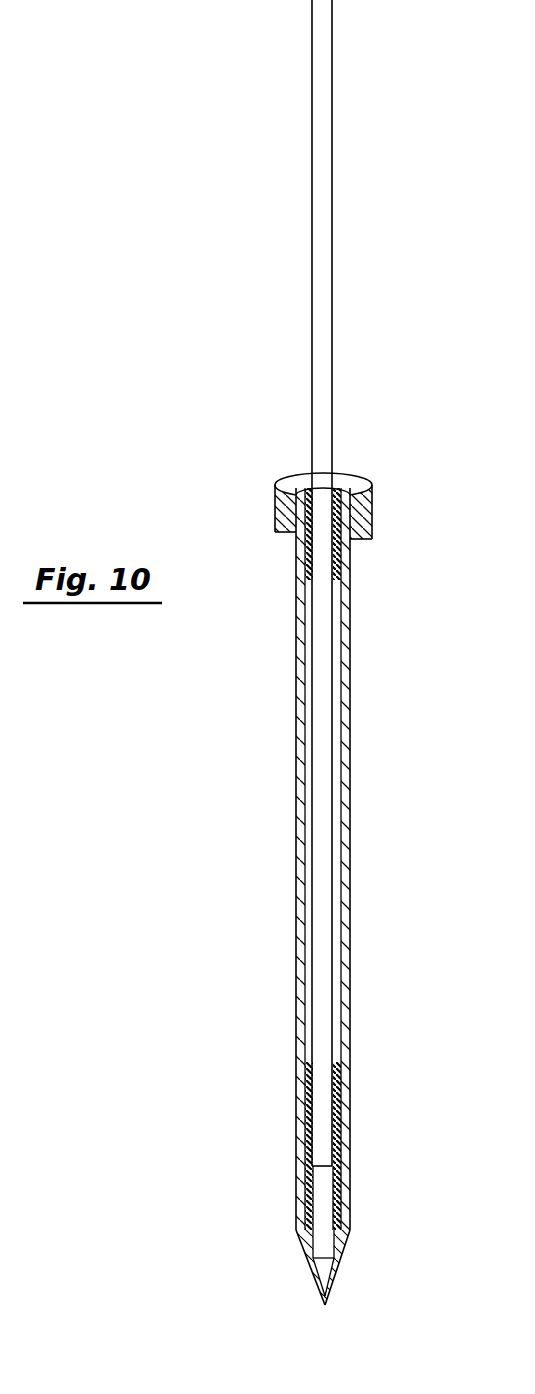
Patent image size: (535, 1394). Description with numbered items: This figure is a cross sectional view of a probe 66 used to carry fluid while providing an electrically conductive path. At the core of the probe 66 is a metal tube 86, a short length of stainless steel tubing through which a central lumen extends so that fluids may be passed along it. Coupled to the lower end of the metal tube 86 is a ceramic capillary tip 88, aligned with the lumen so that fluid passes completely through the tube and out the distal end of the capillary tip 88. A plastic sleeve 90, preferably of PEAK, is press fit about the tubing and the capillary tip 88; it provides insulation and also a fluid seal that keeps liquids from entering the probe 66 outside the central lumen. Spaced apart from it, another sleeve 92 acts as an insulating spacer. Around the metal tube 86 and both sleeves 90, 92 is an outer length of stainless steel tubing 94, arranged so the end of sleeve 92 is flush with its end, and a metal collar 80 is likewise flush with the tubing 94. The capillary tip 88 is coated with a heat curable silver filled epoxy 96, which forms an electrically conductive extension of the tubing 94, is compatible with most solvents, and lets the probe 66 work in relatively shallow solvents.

The probe 66 is at (350, 830).
The metal collar 80 is at (372, 505).
The metal tube 86 is at (333, 334).
The ceramic capillary tip 88 is at (325, 1240).
The plastic sleeve 90 is at (341, 1098).
The sleeve 92 is at (341, 548).
The stainless steel tubing 94 is at (352, 978).
The heat curable silver filled epoxy 96 is at (302, 1253).